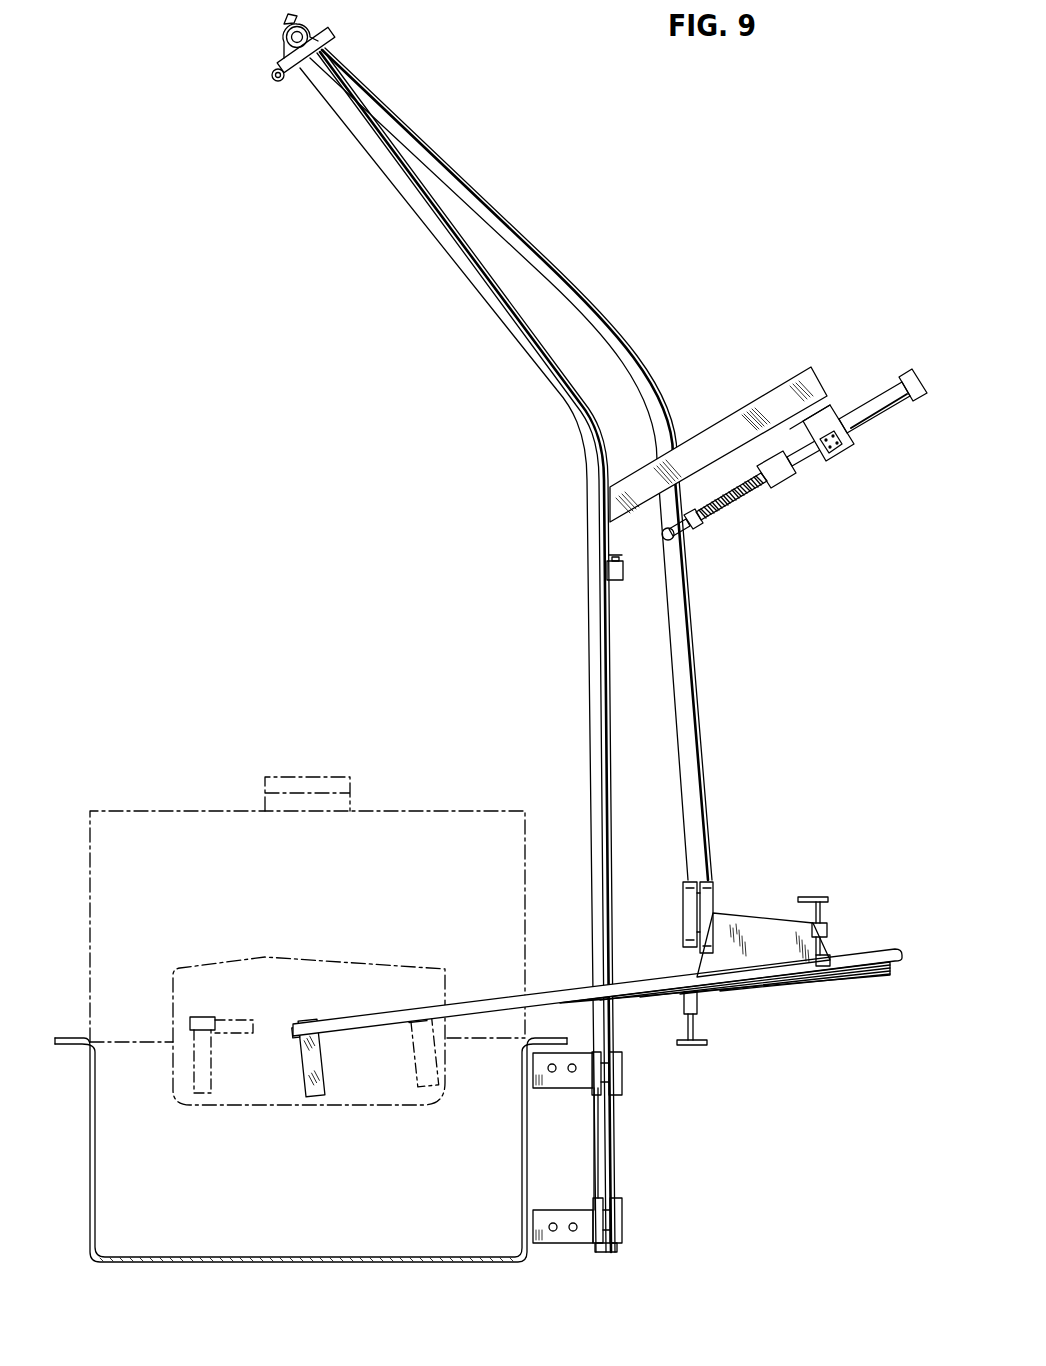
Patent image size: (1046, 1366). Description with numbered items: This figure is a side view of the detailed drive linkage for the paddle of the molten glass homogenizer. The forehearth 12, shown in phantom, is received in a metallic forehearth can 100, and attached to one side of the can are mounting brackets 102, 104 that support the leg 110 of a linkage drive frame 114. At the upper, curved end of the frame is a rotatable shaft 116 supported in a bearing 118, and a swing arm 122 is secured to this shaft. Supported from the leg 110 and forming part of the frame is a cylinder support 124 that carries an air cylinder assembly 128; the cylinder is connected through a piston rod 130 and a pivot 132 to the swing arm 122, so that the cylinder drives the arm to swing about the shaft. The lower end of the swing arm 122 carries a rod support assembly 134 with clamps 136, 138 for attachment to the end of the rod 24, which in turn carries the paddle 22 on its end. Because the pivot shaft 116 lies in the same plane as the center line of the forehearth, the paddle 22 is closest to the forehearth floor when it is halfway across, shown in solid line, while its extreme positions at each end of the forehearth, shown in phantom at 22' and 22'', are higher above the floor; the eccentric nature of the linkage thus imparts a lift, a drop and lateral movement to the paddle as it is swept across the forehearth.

The forehearth 12 is at (452, 822).
The paddle 22 is at (331, 1058).
The paddle extreme position 22' is at (226, 1036).
The paddle extreme position 22'' is at (459, 1049).
The rod 24 is at (503, 998).
The forehearth can 100 is at (375, 1263).
The mounting bracket 102 is at (575, 1078).
The mounting bracket 104 is at (566, 1210).
The leg 110 is at (602, 740).
The linkage drive frame 114 is at (455, 491).
The rotatable shaft 116 is at (287, 41).
The bearing 118 is at (331, 35).
The swing arm 122 is at (562, 283).
The cylinder support 124 is at (702, 440).
The air cylinder assembly 128 is at (858, 410).
The piston rod 130 is at (733, 508).
The pivot 132 is at (680, 545).
The rod support assembly 134 is at (762, 930).
The clamp 136 is at (700, 1019).
The clamp 138 is at (830, 917).